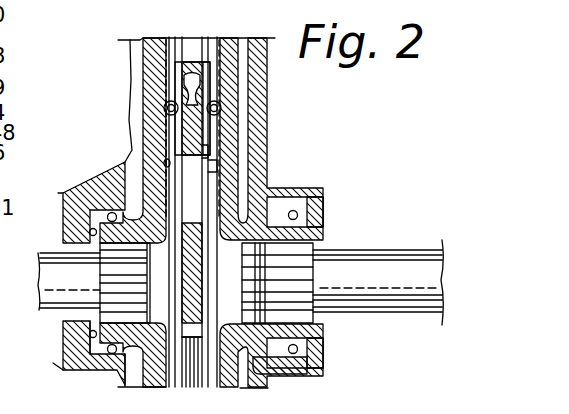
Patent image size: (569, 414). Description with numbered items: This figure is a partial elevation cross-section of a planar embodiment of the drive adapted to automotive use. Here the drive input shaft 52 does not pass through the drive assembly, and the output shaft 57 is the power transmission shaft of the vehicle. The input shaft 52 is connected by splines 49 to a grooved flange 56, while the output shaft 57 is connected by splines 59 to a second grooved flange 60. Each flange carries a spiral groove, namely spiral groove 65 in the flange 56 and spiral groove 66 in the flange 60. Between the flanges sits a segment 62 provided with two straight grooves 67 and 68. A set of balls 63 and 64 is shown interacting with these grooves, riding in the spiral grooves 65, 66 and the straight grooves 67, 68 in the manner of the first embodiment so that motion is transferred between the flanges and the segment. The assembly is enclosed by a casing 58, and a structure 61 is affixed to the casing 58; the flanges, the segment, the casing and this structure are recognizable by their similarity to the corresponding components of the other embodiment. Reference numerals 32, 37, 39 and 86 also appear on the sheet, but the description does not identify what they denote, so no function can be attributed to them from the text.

The shaft 32 is at (0, 300).
The housing 37 is at (15, 358).
The bearing 39 is at (15, 388).
The splines 49 is at (118, 318).
The drive input shaft 52 is at (55, 245).
The grooved flange 56 is at (165, 93).
The output shaft 57 is at (404, 310).
The casing 58 is at (78, 192).
The splines 59 is at (323, 231).
The grooved flange 60 is at (228, 40).
The structure 61 is at (193, 37).
The segment 62 is at (205, 150).
The ball 63 is at (166, 108).
The ball 64 is at (219, 108).
The spiral groove 65 is at (164, 163).
The spiral groove 66 is at (213, 165).
The straight groove 67 is at (182, 96).
The straight groove 68 is at (203, 92).
The spline 86 is at (168, 388).